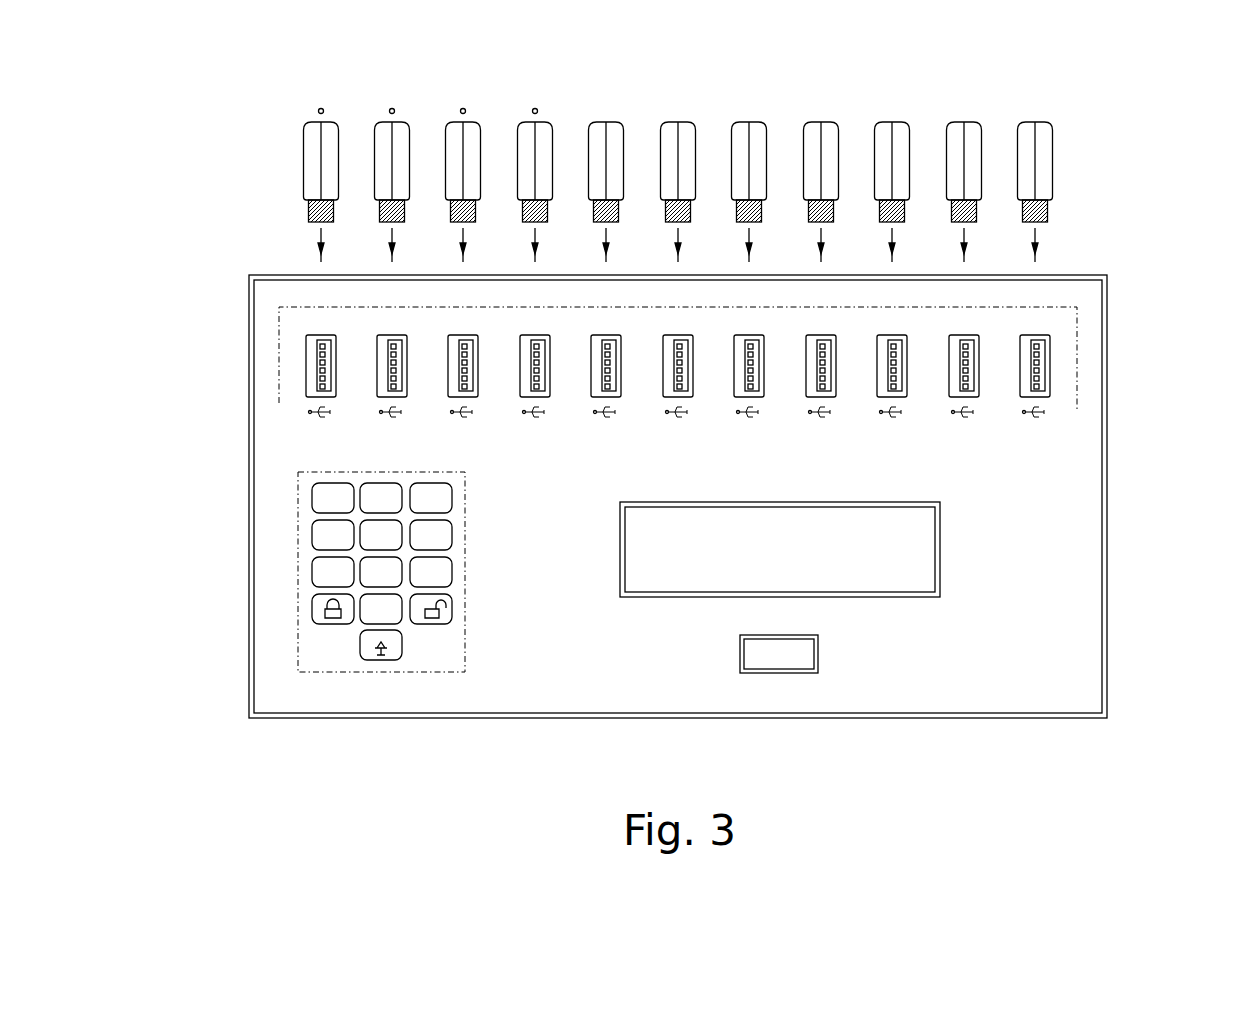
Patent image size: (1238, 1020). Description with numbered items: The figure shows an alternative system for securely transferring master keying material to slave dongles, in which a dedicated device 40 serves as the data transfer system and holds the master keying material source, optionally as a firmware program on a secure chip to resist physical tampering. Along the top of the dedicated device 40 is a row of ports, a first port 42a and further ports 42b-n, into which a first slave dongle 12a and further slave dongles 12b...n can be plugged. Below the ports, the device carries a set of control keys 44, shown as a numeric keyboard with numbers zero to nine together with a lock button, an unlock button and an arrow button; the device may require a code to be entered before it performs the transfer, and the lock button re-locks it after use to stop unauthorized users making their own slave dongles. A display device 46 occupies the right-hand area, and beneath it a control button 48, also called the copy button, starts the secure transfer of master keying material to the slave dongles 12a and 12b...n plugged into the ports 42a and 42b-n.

The slave dongle 12a is at (321, 108).
The slave dongles 12b...n is at (535, 108).
The dedicated device 40 is at (1107, 501).
The port 42a is at (295, 368).
The ports 42b-n is at (606, 433).
The control keys 44 is at (296, 569).
The display device 46 is at (920, 599).
The control button 48 is at (780, 675).